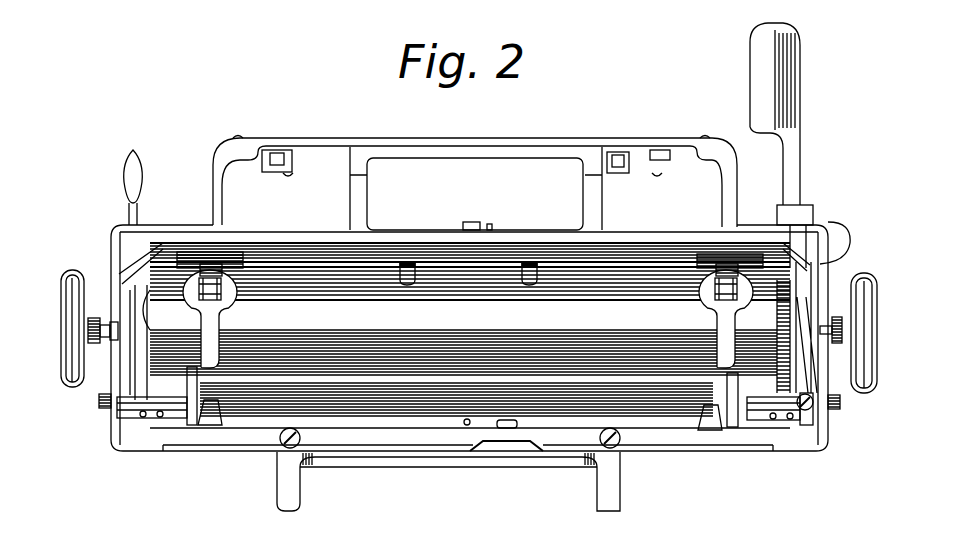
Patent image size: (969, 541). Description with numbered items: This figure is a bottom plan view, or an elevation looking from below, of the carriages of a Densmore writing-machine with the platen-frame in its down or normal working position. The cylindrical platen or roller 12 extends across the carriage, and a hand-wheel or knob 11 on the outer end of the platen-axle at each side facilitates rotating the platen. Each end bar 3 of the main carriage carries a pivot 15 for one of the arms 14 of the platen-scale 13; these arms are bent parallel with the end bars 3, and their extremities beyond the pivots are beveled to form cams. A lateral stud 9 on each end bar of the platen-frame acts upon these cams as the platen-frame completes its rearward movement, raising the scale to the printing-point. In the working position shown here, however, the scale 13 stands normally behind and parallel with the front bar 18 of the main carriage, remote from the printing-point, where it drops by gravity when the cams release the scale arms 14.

The end bar of the main carriage 3 is at (113, 419).
The lateral stud 9 is at (103, 406).
The hand-wheel or knob 11 is at (75, 388).
The cylindrical platen or roller 12 is at (466, 341).
The platen-scale 13 is at (433, 247).
The arms 14 is at (150, 263).
The pivot 15 is at (120, 333).
The front bar of the main carriage 18 is at (302, 236).